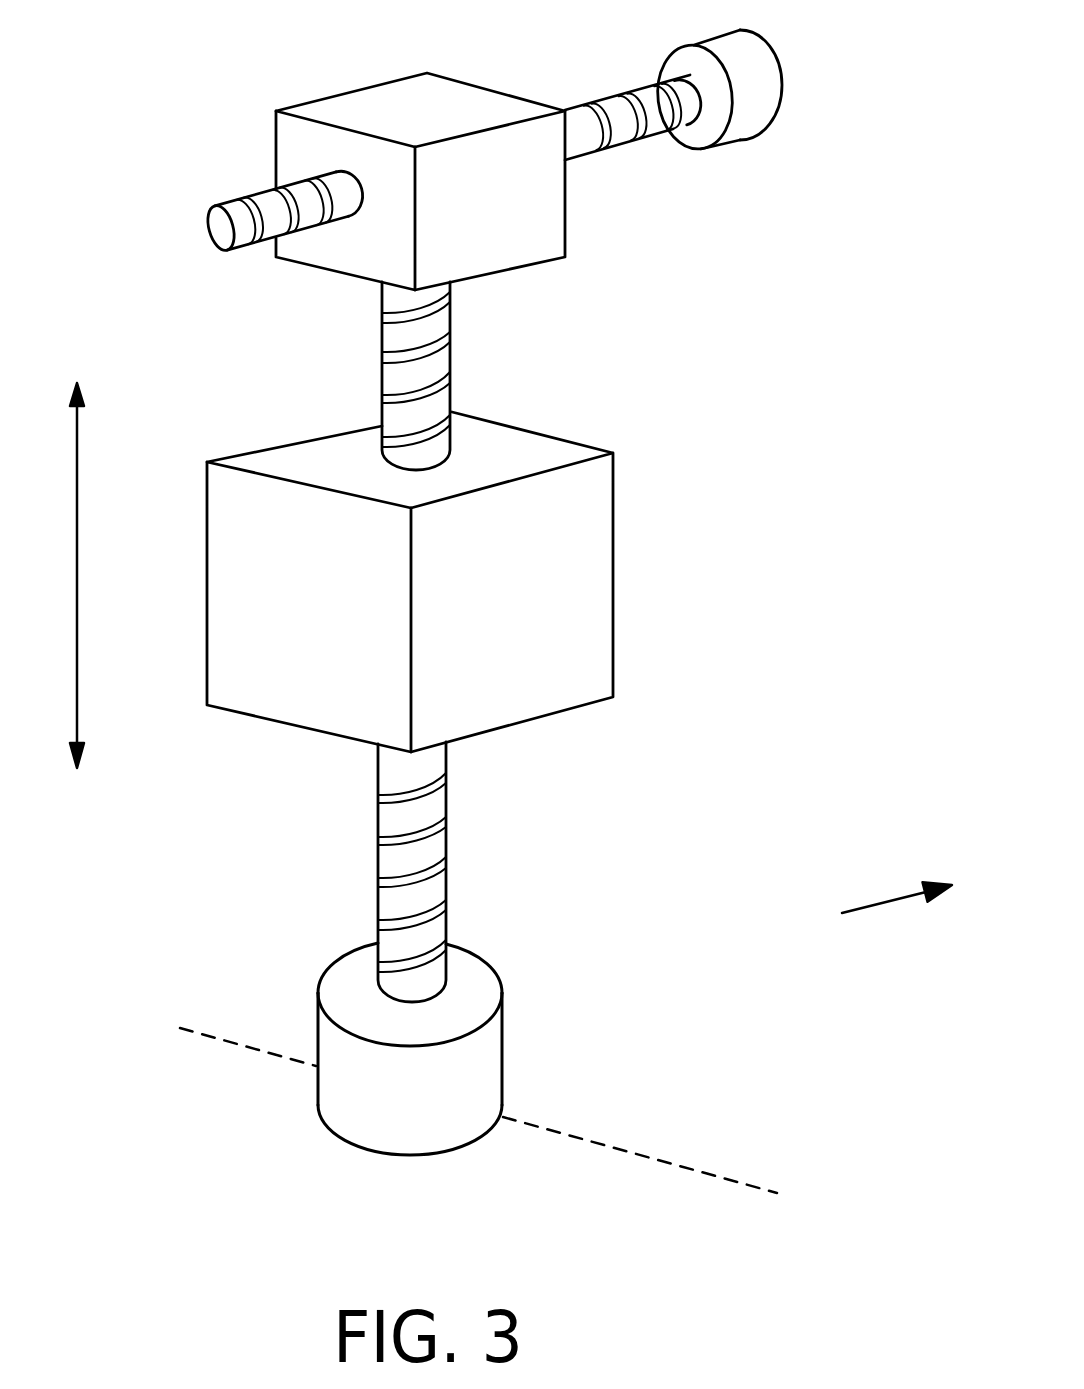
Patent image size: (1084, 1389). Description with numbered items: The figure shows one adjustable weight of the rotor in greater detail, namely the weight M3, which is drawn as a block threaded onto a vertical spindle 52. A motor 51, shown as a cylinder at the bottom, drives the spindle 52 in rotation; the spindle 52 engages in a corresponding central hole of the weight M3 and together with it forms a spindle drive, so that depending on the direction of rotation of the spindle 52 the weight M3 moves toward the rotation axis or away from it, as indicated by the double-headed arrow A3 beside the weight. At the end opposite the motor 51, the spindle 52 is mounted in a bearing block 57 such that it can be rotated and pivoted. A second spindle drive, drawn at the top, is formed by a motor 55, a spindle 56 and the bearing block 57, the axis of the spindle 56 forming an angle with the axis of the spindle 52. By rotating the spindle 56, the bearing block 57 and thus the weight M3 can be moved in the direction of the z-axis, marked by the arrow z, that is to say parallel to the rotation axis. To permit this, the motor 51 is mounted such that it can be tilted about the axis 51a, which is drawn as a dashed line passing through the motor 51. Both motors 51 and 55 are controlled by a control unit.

The motor 51 is at (503, 1057).
The axis 51a is at (688, 1168).
The spindle 52 is at (447, 885).
The motor 55 is at (745, 142).
The spindle 56 is at (618, 148).
The bearing block 57 is at (473, 78).
The weight M3 is at (613, 583).
The arrow A3 is at (100, 575).
The z-axis z is at (897, 889).